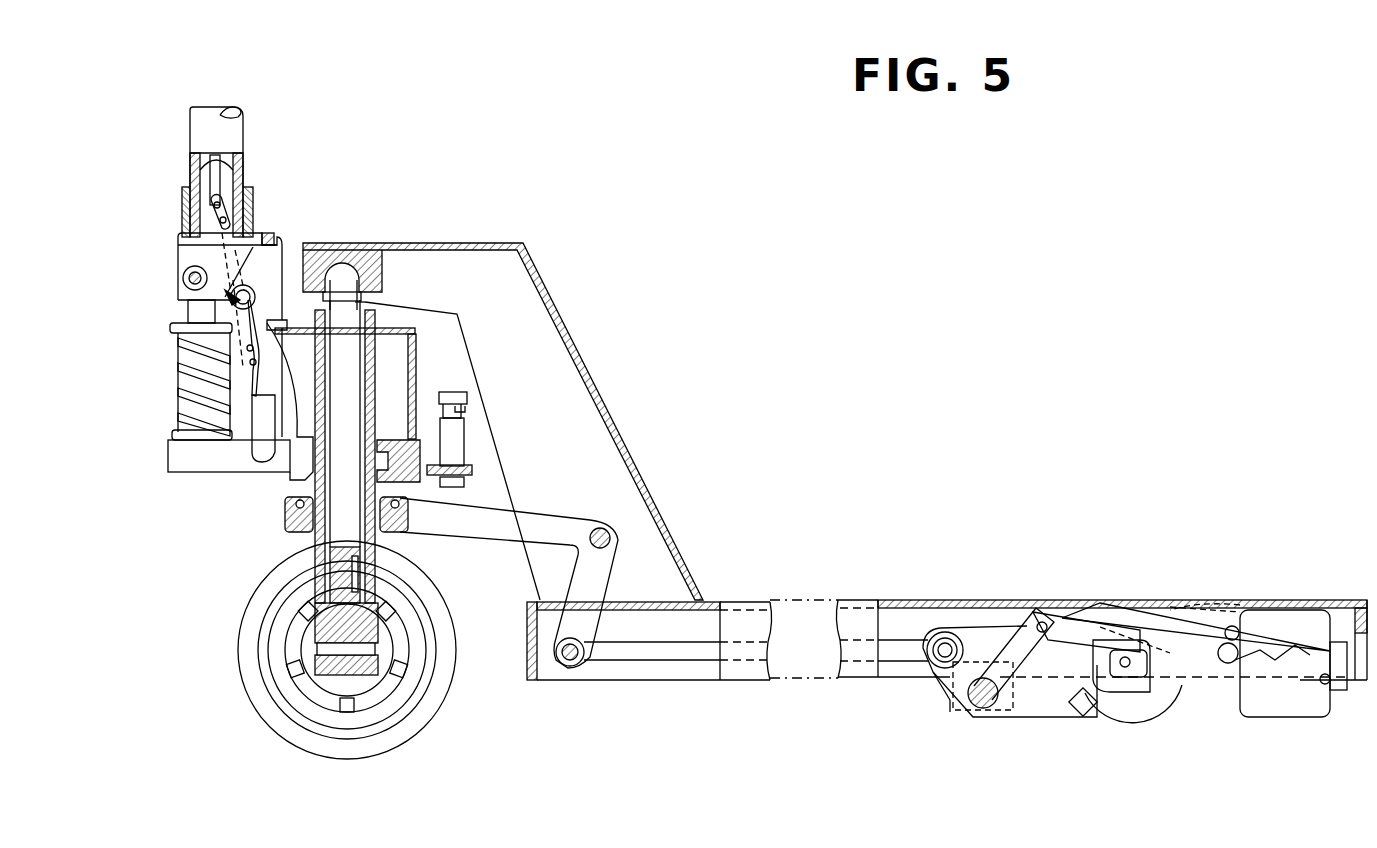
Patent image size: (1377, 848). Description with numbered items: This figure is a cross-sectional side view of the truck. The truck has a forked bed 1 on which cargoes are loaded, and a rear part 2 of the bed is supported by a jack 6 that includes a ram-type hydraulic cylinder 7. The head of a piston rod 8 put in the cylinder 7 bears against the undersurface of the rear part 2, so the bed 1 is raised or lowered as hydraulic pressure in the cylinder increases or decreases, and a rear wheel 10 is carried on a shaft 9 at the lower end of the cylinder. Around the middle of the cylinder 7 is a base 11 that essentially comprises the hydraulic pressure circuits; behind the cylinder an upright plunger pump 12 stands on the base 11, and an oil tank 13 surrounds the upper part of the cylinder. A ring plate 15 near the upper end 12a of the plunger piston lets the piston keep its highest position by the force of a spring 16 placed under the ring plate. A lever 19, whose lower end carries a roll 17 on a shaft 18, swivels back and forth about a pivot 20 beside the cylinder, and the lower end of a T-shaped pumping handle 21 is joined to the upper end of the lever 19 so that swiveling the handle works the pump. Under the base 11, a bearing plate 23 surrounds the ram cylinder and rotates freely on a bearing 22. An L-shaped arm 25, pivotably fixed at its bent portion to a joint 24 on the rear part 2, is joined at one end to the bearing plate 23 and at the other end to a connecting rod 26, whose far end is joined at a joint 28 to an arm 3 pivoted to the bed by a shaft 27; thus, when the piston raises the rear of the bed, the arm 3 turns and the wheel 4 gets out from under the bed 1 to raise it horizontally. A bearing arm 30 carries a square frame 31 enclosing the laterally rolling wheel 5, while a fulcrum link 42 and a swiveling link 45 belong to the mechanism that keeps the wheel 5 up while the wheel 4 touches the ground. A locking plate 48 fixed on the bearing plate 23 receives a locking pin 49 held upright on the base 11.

The forked bed 1 is at (741, 602).
The rear part of the bed 2 is at (470, 243).
The arm 3 is at (1036, 705).
The wheel 4 is at (1110, 708).
The wheel 5 is at (1256, 705).
The jack 6 is at (192, 483).
The ram-type hydraulic cylinder 7 is at (325, 560).
The piston rod 8 is at (345, 285).
The shaft 9 is at (340, 672).
The rear wheel 10 is at (247, 637).
The base 11 is at (182, 474).
The plunger pump 12 is at (192, 420).
The upper end of the plunger piston 12a is at (200, 310).
The oil tank 13 is at (418, 350).
The ring plate 15 is at (175, 340).
The spring 16 is at (180, 378).
The roll 17 is at (190, 262).
The shaft 18 is at (184, 280).
The lever 19 is at (185, 200).
The pivot 20 is at (250, 296).
The T-shaped pumping handle 21 is at (232, 132).
The bearing 22 is at (290, 500).
The bearing plate 23 is at (283, 527).
The joint 24 is at (612, 532).
The L-shaped arm 25 is at (488, 523).
The connecting rod 26 is at (627, 655).
The shaft 27 is at (983, 708).
The joint 28 is at (945, 650).
The bearing arm 30 is at (1160, 633).
The square frame 31 is at (1334, 692).
The fulcrum link 42 is at (1006, 640).
The swiveling link 45 is at (1146, 668).
The locking plate 48 is at (455, 462).
The locking pin 49 is at (467, 400).